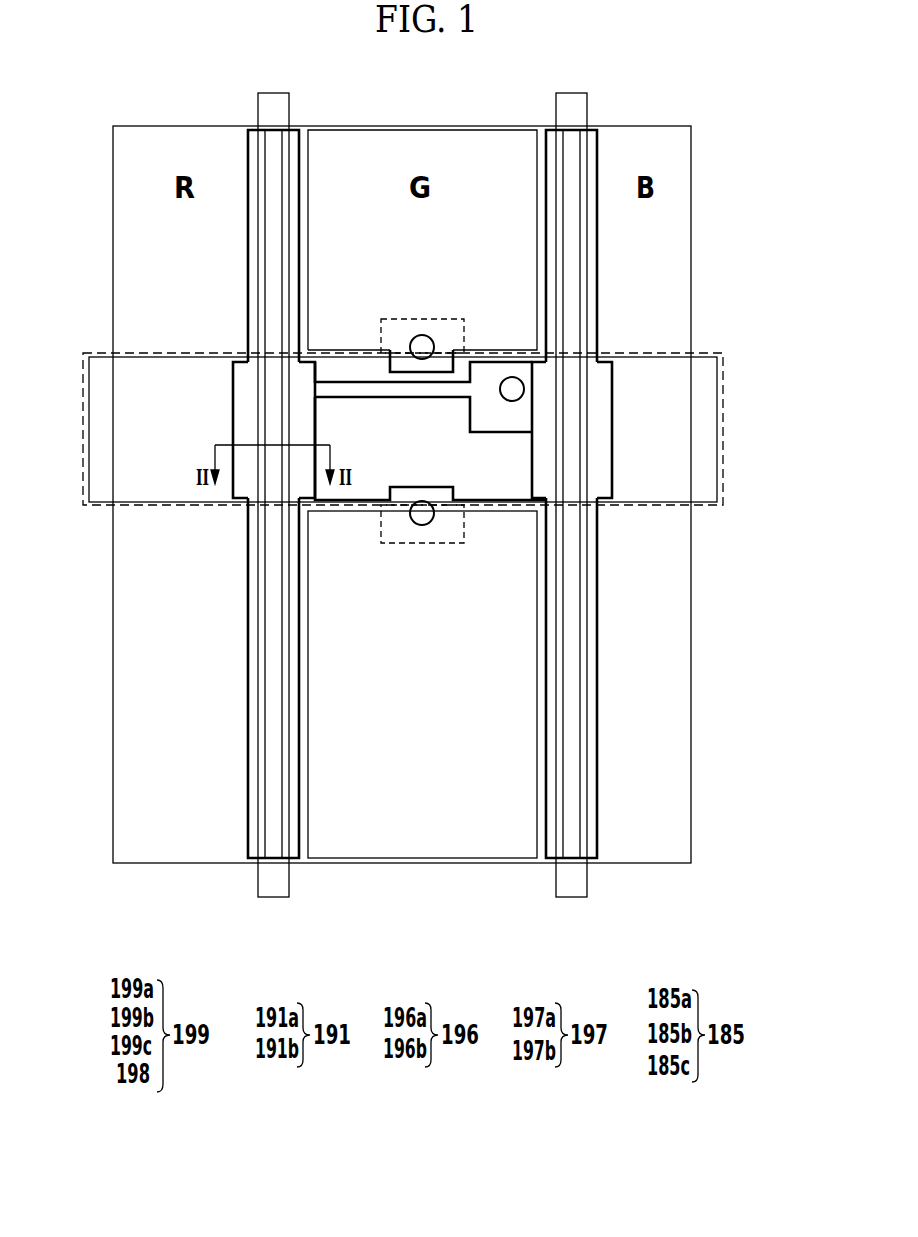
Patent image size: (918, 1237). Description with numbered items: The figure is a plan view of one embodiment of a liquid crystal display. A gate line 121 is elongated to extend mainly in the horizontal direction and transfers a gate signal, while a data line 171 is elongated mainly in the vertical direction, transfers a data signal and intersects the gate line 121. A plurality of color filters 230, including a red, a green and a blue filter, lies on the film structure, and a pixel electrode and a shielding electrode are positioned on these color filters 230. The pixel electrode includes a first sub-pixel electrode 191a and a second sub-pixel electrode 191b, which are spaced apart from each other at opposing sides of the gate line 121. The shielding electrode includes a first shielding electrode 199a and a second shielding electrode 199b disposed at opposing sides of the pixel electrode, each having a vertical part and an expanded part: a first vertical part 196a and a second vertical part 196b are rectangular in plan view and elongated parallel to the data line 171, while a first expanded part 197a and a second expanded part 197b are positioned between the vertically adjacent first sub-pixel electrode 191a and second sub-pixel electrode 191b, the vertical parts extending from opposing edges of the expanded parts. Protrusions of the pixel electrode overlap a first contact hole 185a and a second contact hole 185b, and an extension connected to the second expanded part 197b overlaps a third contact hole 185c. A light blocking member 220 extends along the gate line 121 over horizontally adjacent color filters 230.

The gate line 121 is at (717, 429).
The data line 171 is at (270, 897).
The first contact hole 185a is at (422, 335).
The second contact hole 185b is at (422, 527).
The third contact hole 185c is at (512, 376).
The first sub-pixel electrode 191a is at (420, 129).
The second sub-pixel electrode 191b is at (424, 863).
The first vertical part 196a is at (247, 591).
The second vertical part 196b is at (597, 617).
The first expanded part 197a is at (233, 392).
The second expanded part 197b is at (612, 455).
The first shielding electrode 199a is at (274, 858).
The second shielding electrode 199b is at (550, 883).
The light blocking member 220 is at (723, 476).
The color filter 230 is at (685, 187).